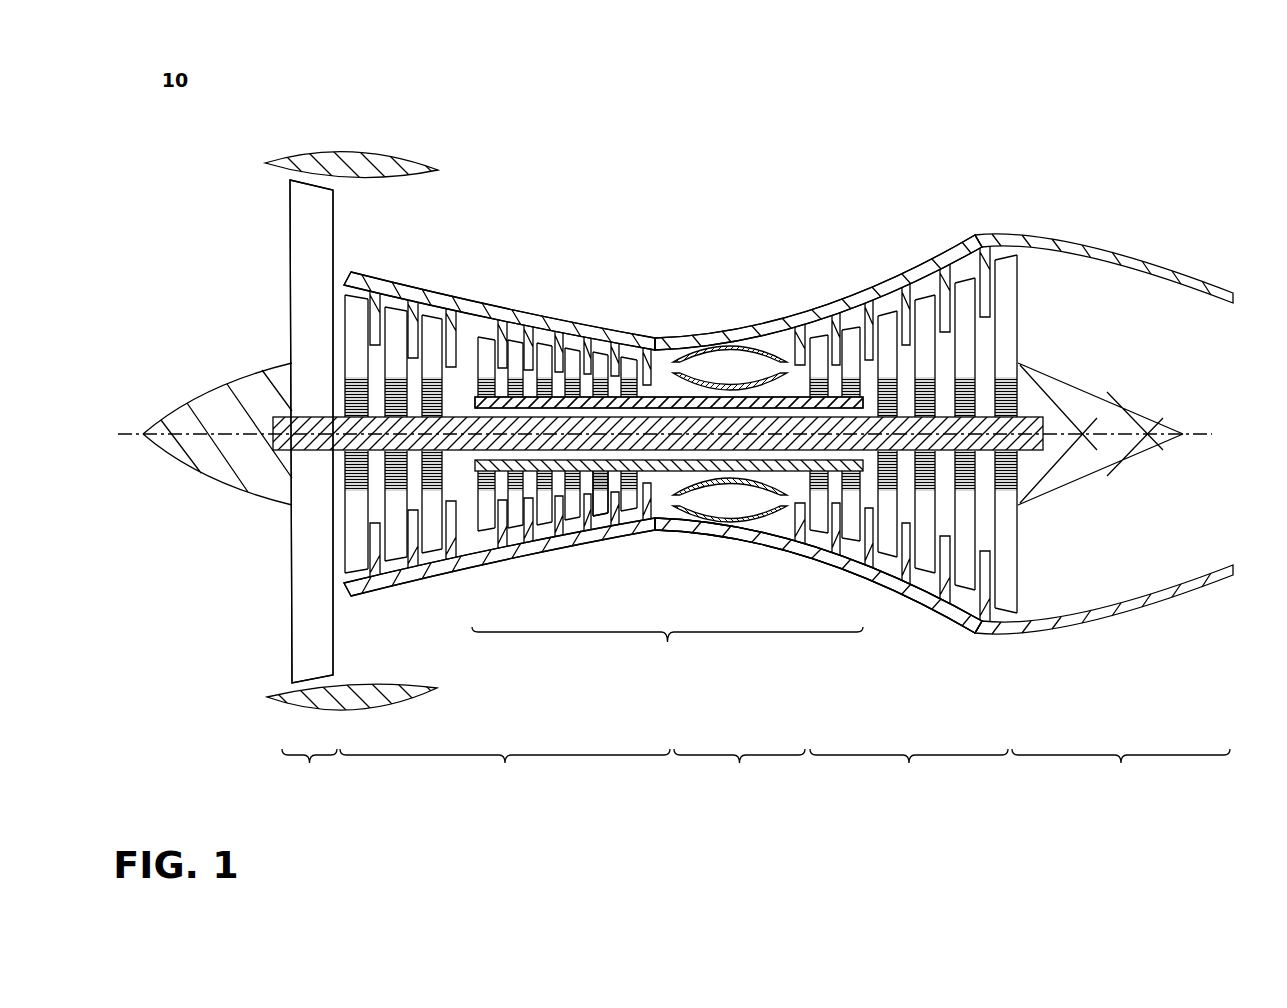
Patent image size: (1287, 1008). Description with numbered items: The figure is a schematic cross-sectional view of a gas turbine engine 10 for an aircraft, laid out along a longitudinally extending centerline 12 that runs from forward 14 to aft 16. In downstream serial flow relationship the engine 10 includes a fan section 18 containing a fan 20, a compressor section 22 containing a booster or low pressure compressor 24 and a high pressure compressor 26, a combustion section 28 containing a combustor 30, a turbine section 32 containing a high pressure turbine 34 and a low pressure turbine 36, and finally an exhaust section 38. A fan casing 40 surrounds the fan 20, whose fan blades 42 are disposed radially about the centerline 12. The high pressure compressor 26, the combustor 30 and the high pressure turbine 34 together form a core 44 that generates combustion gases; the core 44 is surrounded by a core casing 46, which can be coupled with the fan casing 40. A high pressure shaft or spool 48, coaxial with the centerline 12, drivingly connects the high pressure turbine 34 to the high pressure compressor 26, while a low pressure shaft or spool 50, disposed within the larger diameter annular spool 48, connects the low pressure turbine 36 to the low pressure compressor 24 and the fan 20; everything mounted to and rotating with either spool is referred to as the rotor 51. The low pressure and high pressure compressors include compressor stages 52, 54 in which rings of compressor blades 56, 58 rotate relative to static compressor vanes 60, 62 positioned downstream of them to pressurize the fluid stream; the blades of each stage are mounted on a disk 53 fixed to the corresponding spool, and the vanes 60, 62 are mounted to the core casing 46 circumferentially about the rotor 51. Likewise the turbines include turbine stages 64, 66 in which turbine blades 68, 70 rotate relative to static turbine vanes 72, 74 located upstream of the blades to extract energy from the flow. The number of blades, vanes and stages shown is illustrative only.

The gas turbine engine 10 is at (186, 91).
The centerline 12 is at (200, 430).
The forward 14 is at (142, 434).
The aft 16 is at (1188, 434).
The fan section 18 is at (309, 771).
The fan 20 is at (284, 239).
The compressor section 22 is at (505, 771).
The low pressure compressor 24 is at (466, 563).
The high pressure compressor 26 is at (606, 528).
The combustion section 28 is at (739, 771).
The combustor 30 is at (781, 340).
The turbine section 32 is at (909, 771).
The high pressure turbine 34 is at (795, 563).
The low pressure turbine 36 is at (913, 603).
The exhaust section 38 is at (1121, 771).
The fan casing 40 is at (350, 152).
The fan blades 42 is at (302, 632).
The core 44 is at (667, 648).
The core casing 46 is at (712, 337).
The HP shaft or spool 48 is at (665, 395).
The LP shaft or spool 50 is at (457, 418).
The rotor 51 is at (594, 408).
The compressor stages 52 is at (343, 262).
The disk 53 is at (922, 390).
The compressor stages 54 is at (487, 301).
The compressor blades 56 is at (377, 307).
The compressor blades 58 is at (503, 360).
The static compressor vanes 60 is at (415, 338).
The static compressor vanes 62 is at (490, 350).
The turbine stages 64 is at (822, 299).
The turbine stages 66 is at (943, 245).
The turbine blades 68 is at (852, 343).
The turbine blades 70 is at (963, 290).
The static turbine vanes 72 is at (839, 337).
The static turbine vanes 74 is at (945, 273).